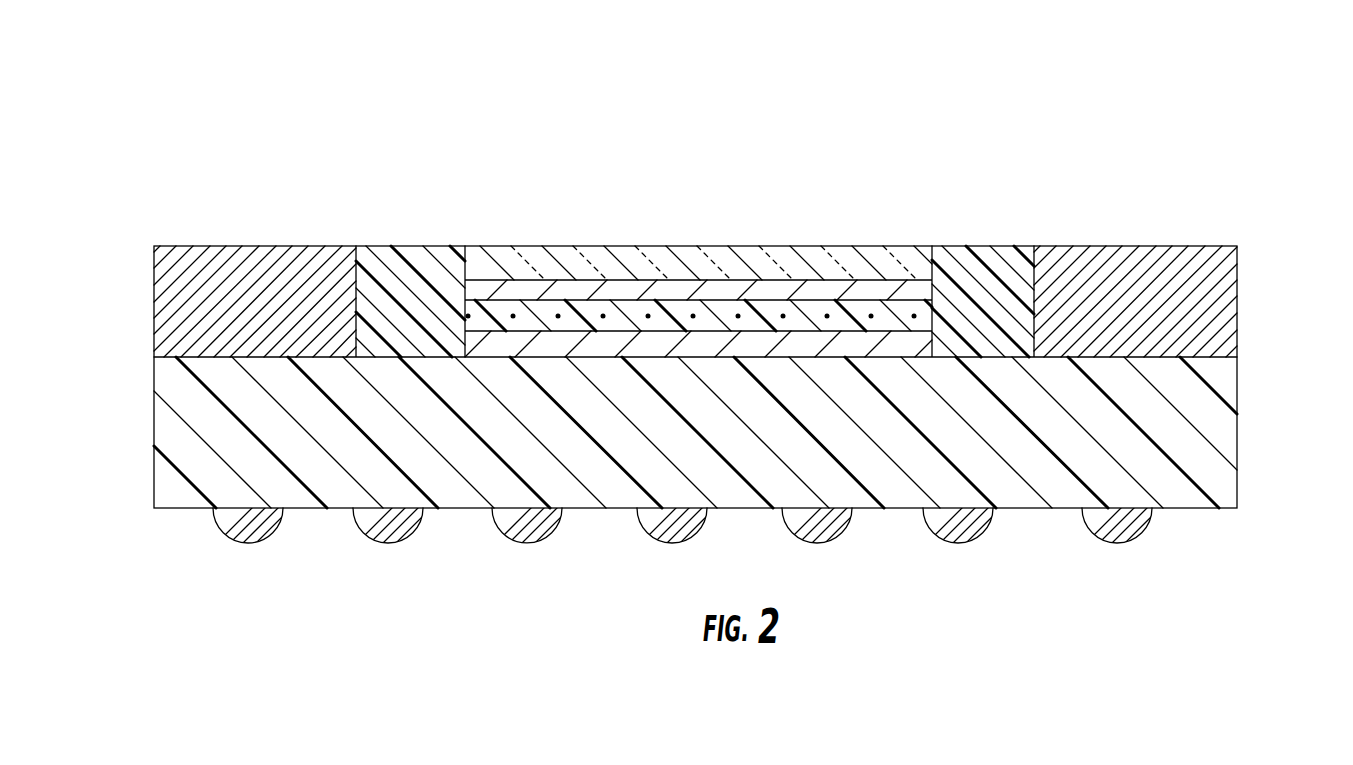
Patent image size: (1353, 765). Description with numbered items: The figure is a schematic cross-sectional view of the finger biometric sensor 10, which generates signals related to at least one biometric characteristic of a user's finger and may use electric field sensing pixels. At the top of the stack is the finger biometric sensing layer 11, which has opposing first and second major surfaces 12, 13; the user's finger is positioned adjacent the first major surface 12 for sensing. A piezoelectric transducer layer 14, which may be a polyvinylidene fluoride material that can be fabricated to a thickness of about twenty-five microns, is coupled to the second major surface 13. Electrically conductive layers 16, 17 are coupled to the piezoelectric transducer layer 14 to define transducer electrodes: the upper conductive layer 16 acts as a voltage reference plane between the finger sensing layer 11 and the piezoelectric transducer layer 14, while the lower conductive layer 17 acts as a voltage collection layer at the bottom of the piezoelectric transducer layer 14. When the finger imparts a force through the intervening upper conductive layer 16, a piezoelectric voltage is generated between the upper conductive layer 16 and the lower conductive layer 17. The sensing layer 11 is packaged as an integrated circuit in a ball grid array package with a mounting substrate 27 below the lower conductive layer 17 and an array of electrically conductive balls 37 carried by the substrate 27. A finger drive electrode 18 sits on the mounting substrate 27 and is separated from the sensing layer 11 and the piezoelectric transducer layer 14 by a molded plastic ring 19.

The finger biometric sensor 10 is at (322, 157).
The finger biometric sensing layer 11 is at (908, 257).
The first major surface 12 is at (488, 246).
The second major surface 13 is at (466, 314).
The piezoelectric transducer layer 14 is at (937, 320).
The upper conductive layer 16 is at (917, 292).
The lower conductive layer 17 is at (480, 347).
The finger drive electrode 18 is at (1203, 273).
The molded plastic ring 19 is at (370, 305).
The mounting substrate 27 is at (1200, 423).
The electrically conductive balls 37 is at (238, 523).